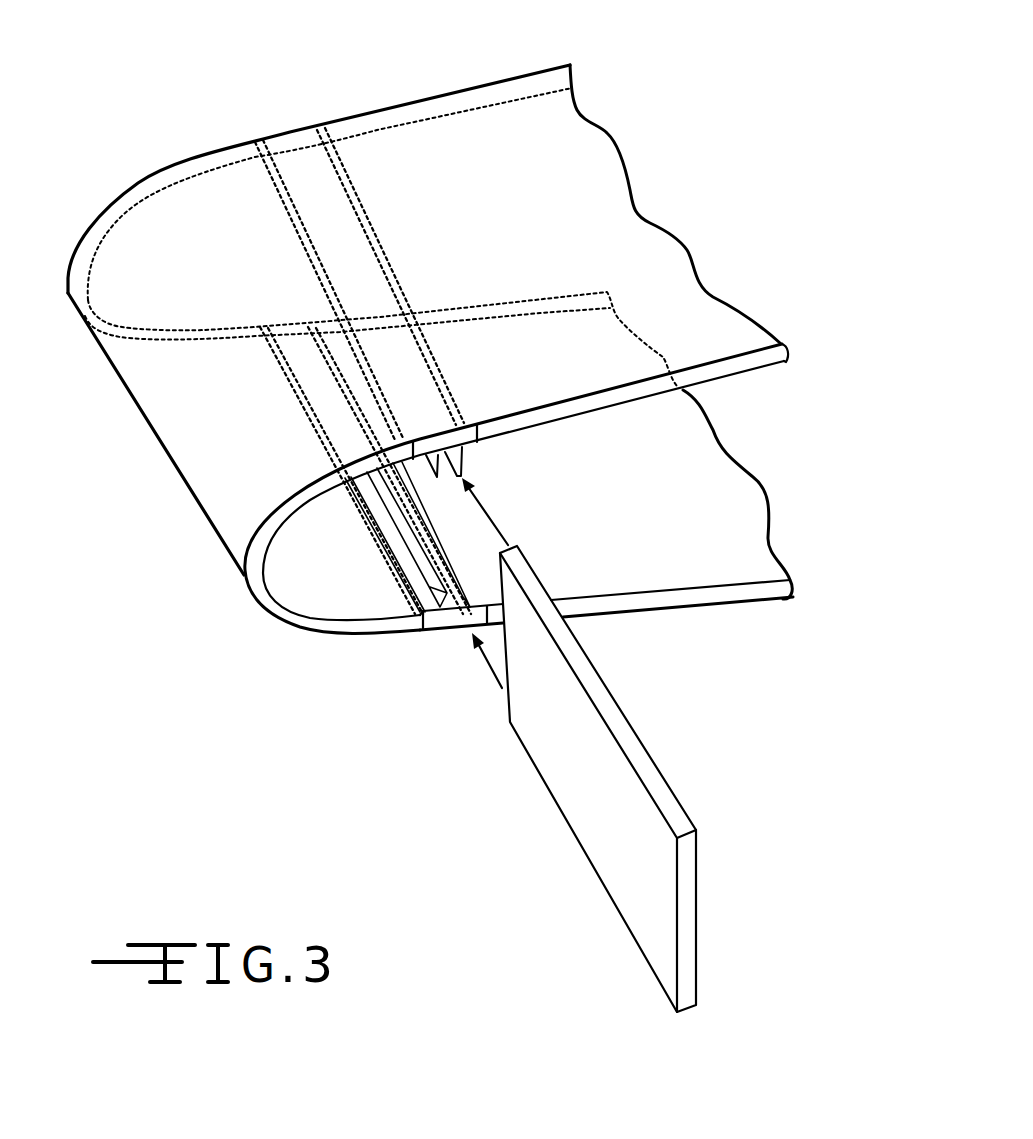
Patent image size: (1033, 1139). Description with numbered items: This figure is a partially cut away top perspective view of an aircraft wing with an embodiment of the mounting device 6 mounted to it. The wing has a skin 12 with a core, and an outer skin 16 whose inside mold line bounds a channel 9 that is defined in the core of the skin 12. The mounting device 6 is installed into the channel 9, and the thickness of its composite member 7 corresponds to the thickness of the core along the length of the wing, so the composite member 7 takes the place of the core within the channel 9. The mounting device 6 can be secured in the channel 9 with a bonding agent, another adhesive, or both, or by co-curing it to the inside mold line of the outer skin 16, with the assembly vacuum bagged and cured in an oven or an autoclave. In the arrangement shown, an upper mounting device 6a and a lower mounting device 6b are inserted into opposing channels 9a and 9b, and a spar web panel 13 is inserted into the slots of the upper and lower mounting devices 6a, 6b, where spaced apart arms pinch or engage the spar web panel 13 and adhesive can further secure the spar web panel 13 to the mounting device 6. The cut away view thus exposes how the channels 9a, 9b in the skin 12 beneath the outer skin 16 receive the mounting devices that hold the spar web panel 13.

The outer skin 16 is at (557, 185).
The spar web panel 13 is at (640, 741).
The skin 12 is at (793, 349).
The channel 9 is at (313, 316).
The upper channel 9a is at (295, 158).
The lower channel 9b is at (317, 358).
The composite member 7 is at (425, 437).
The mounting device 6 is at (468, 449).
The upper mounting device 6a is at (333, 490).
The lower mounting device 6b is at (440, 596).